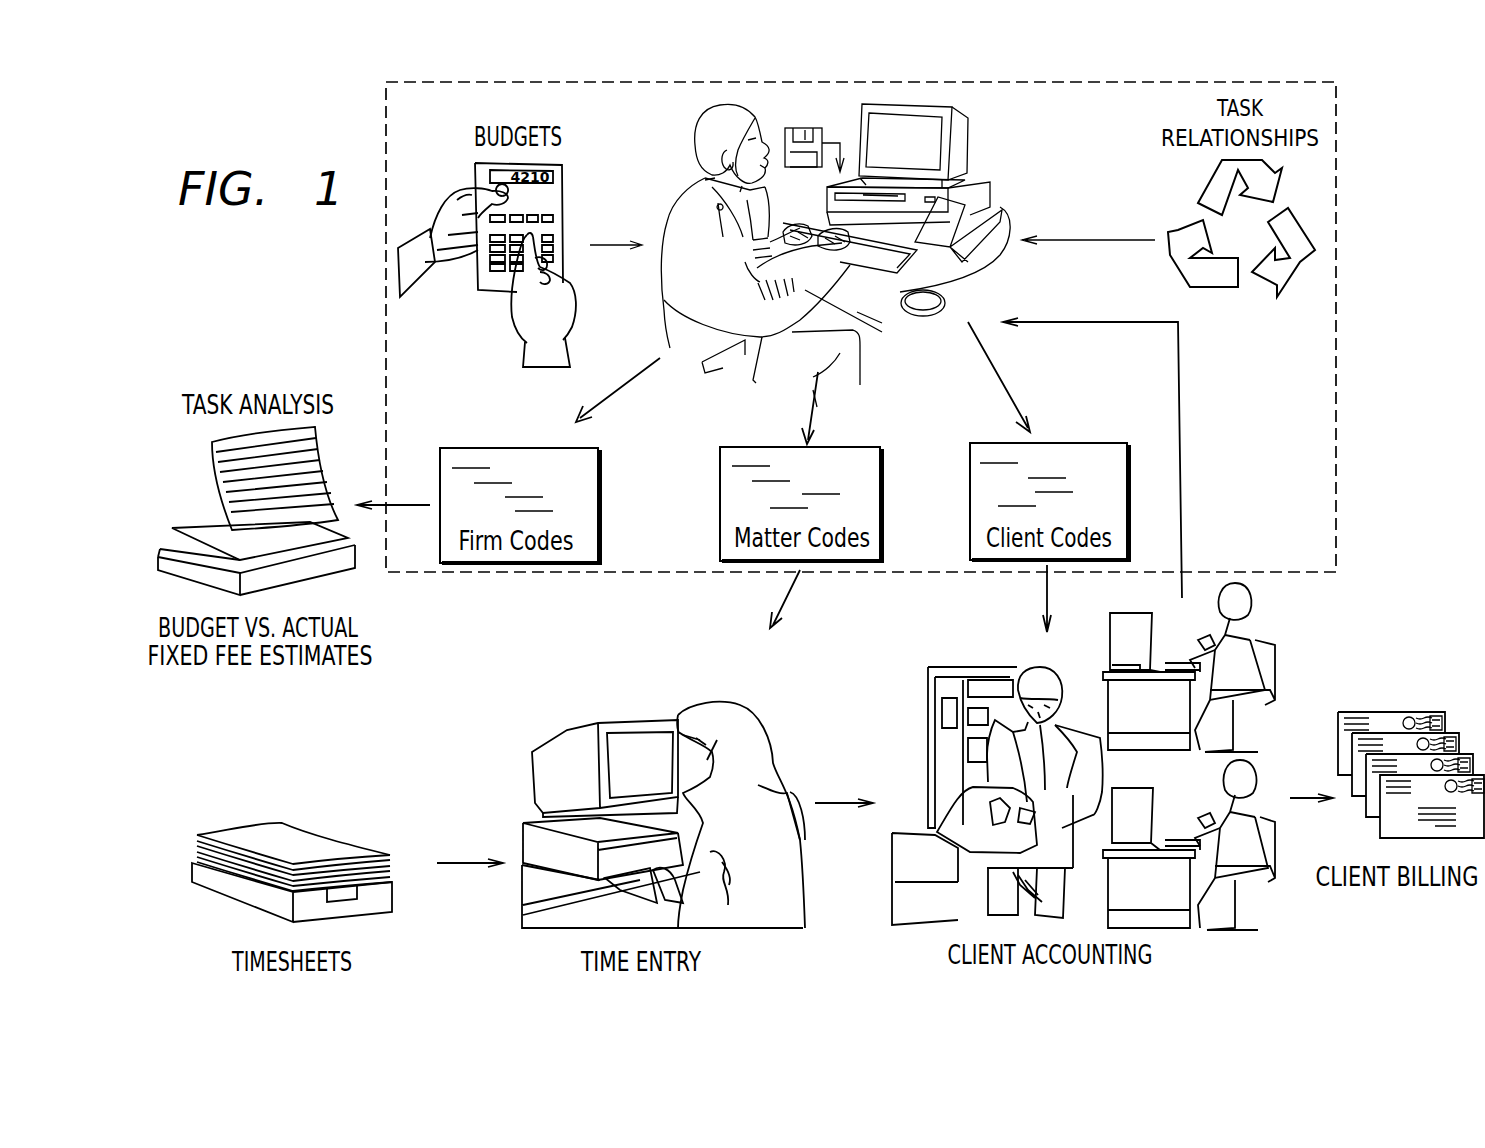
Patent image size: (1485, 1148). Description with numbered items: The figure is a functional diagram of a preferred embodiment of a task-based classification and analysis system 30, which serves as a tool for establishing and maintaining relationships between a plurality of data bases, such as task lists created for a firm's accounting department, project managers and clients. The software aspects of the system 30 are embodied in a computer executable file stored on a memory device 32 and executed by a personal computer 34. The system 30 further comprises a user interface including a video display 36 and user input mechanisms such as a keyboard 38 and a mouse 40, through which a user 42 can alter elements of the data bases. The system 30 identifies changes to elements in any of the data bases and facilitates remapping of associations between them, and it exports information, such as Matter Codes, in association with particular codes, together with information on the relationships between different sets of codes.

The task-based classification and analysis system 30 is at (385, 378).
The memory device 32 is at (805, 128).
The personal computer 34 is at (840, 215).
The video display 36 is at (970, 142).
The keyboard 38 is at (862, 266).
The mouse 40 is at (917, 316).
The user 42 is at (690, 212).